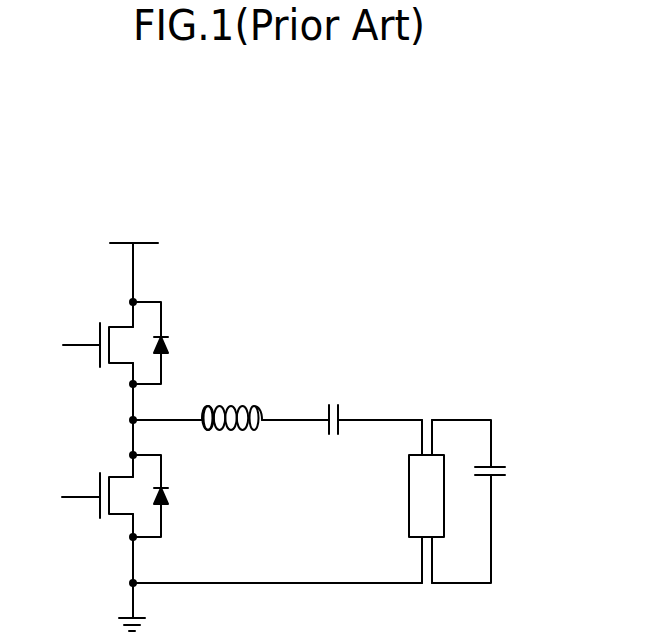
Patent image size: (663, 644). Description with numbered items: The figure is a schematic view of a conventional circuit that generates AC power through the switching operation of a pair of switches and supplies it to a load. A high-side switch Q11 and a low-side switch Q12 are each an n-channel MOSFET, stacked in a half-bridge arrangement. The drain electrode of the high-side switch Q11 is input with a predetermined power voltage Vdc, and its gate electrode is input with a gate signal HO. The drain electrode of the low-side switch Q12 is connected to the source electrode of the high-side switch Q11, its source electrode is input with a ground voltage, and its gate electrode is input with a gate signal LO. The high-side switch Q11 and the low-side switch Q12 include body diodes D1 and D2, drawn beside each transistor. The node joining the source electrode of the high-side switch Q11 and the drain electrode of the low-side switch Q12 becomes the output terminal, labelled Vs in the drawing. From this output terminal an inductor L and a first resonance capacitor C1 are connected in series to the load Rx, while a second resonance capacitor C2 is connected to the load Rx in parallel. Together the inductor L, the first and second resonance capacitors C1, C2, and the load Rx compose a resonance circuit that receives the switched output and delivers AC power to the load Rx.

The power voltage Vdc is at (134, 259).
The gate signal HO is at (66, 345).
The gate signal LO is at (66, 497).
The high-side switch Q11 is at (109, 346).
The low-side switch Q12 is at (109, 499).
The body diode D1 is at (164, 343).
The body diode D2 is at (164, 496).
The switching node voltage Vs is at (149, 419).
The inductor L is at (232, 434).
The first resonance capacitor C1 is at (342, 434).
The load Rx is at (410, 501).
The second resonance capacitor C2 is at (484, 501).